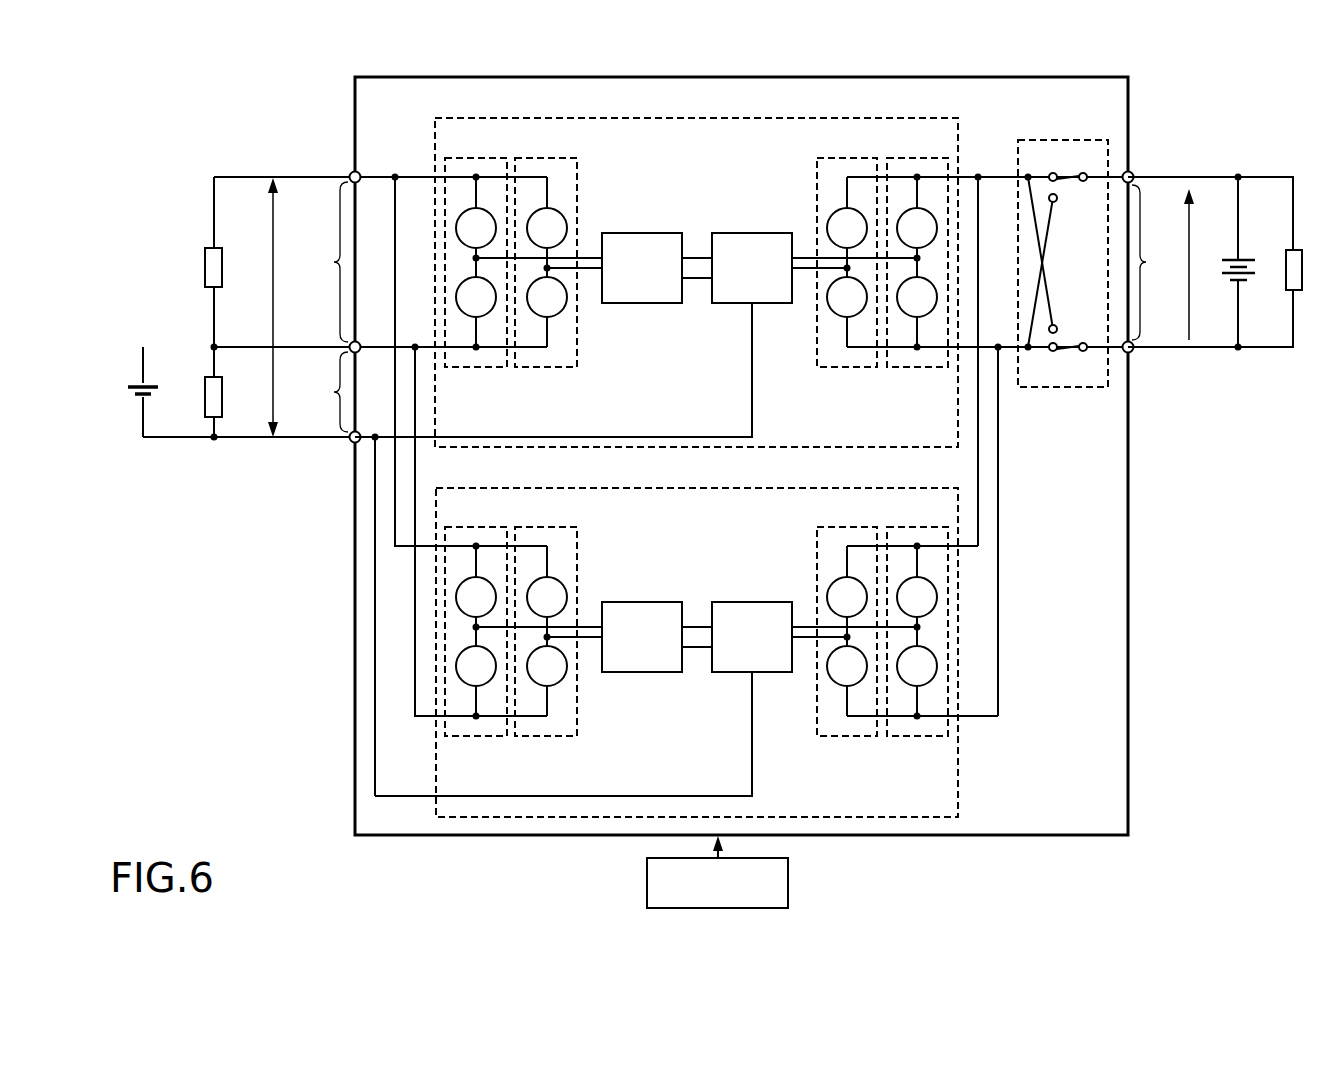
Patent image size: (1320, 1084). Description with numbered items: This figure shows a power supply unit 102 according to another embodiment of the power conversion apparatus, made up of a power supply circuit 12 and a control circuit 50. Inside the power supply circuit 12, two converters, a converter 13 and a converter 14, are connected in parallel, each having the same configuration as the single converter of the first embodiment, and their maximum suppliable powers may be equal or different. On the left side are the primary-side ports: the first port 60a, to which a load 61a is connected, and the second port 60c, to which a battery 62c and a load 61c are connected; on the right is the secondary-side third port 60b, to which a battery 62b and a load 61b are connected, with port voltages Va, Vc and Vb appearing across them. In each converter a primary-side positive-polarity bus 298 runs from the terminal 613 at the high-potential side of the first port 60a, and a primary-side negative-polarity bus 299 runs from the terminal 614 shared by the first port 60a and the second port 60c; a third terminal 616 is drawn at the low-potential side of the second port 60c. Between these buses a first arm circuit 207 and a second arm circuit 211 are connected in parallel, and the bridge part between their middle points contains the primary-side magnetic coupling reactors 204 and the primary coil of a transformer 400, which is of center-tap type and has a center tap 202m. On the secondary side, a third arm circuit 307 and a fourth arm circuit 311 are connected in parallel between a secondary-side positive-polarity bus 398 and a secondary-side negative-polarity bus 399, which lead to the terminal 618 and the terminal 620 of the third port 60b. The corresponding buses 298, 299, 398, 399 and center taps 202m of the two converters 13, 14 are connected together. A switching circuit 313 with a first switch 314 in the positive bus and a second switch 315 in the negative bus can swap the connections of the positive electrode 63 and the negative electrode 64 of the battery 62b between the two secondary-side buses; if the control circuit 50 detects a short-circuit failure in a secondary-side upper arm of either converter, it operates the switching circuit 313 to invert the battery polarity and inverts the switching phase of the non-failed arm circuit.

The power supply unit 102 is at (216, 105).
The power supply circuit 12 is at (1130, 103).
The converter 13 is at (722, 117).
The converter 14 is at (724, 488).
The control circuit 50 is at (790, 882).
The first port 60a is at (321, 262).
The third port 60b is at (1161, 262).
The second port 60c is at (321, 392).
The load 61a is at (210, 247).
The load 61b is at (1290, 292).
The load 61c is at (207, 378).
The battery 62b is at (1248, 271).
The battery 62c is at (150, 395).
The positive electrode 63 is at (1235, 258).
The negative electrode 64 is at (1236, 284).
The center tap 202m is at (750, 305).
The primary-side magnetic coupling reactors 204 is at (630, 233).
The first arm circuit 207 is at (476, 368).
The second arm circuit 211 is at (562, 368).
The primary-side positive-polarity bus 298 is at (527, 176).
The primary-side negative-polarity bus 299 is at (527, 349).
The third arm circuit 307 is at (918, 368).
The fourth arm circuit 311 is at (830, 368).
The switching circuit 313 is at (1067, 251).
The first switch 314 is at (1085, 182).
The second switch 315 is at (1062, 344).
The secondary-side positive-polarity bus 398 is at (868, 176).
The secondary-side negative-polarity bus 399 is at (868, 349).
The transformer 400 is at (740, 233).
The terminal 613 is at (351, 172).
The terminal 614 is at (350, 345).
The input terminal 616 is at (352, 442).
The terminal 618 is at (1132, 172).
The terminal 620 is at (1132, 352).